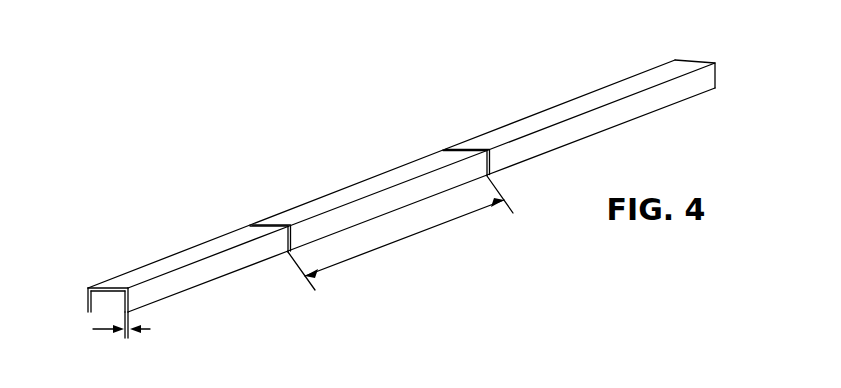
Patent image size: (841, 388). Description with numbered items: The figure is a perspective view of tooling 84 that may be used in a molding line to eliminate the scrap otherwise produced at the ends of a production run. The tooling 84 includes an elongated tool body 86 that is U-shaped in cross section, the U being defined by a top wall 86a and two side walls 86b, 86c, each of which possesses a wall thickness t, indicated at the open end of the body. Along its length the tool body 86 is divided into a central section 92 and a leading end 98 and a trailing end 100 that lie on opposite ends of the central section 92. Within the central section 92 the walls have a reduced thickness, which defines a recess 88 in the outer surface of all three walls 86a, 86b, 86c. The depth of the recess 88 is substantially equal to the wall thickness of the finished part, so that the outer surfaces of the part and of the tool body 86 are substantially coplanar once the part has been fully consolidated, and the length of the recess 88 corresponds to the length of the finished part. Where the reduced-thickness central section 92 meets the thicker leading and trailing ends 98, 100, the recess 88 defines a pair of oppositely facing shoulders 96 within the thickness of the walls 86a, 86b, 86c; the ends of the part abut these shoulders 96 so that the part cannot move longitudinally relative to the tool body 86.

The tooling 84 is at (216, 169).
The tool body 86 is at (603, 100).
The top wall 86a is at (126, 284).
The side wall 86b is at (88, 300).
The side wall 86c is at (130, 308).
The recess 88 is at (368, 195).
The central section 92 is at (405, 238).
The shoulders 96 is at (276, 220).
The leading end 98 is at (717, 75).
The trailing end 100 is at (185, 262).